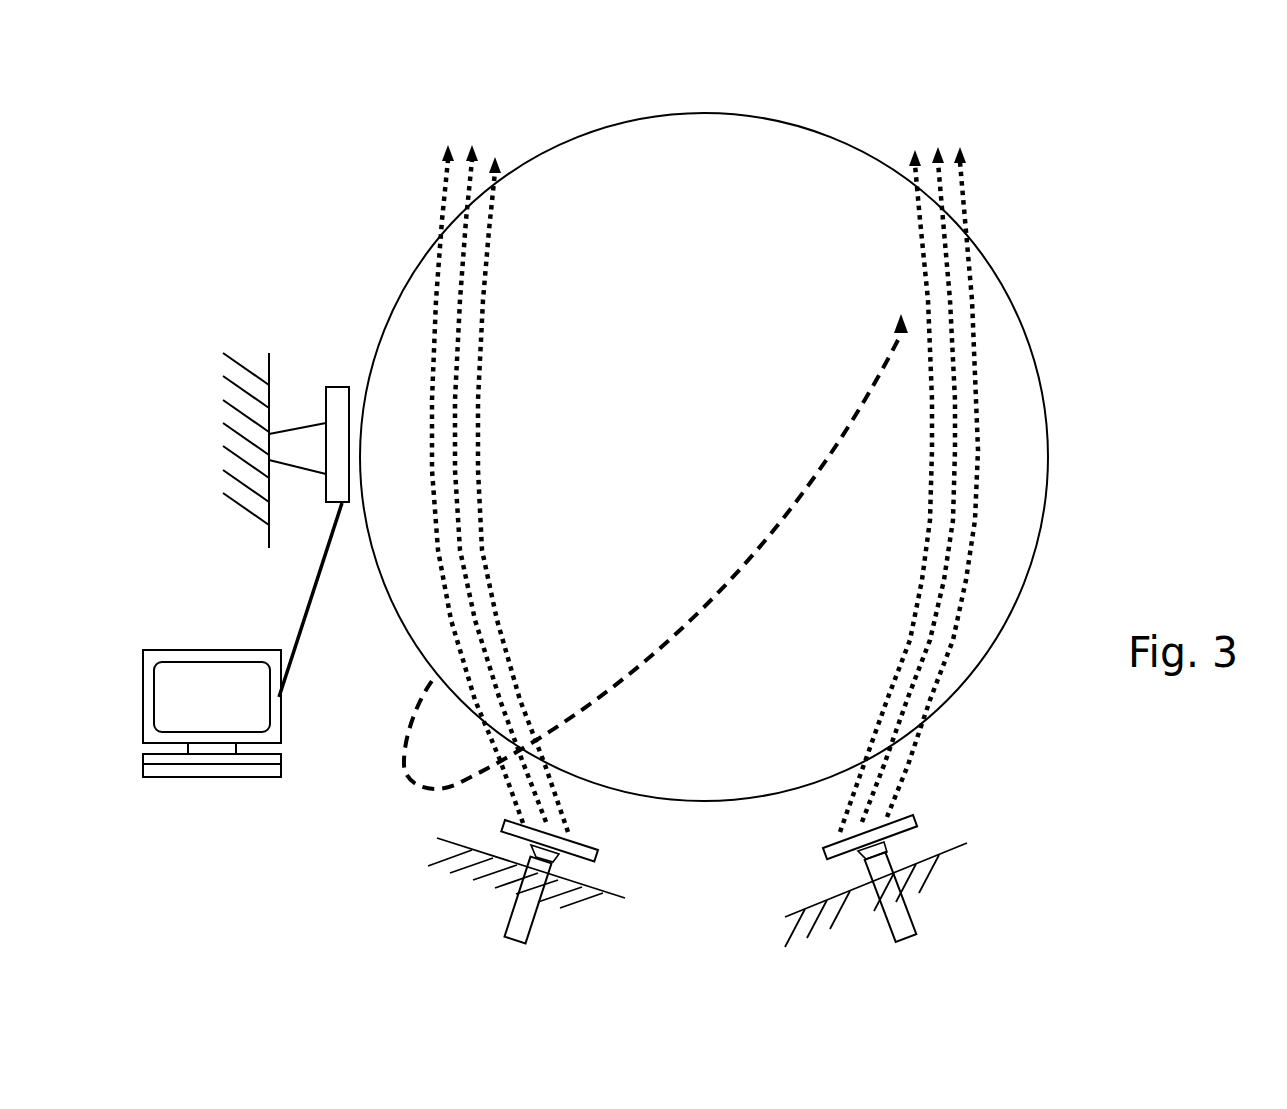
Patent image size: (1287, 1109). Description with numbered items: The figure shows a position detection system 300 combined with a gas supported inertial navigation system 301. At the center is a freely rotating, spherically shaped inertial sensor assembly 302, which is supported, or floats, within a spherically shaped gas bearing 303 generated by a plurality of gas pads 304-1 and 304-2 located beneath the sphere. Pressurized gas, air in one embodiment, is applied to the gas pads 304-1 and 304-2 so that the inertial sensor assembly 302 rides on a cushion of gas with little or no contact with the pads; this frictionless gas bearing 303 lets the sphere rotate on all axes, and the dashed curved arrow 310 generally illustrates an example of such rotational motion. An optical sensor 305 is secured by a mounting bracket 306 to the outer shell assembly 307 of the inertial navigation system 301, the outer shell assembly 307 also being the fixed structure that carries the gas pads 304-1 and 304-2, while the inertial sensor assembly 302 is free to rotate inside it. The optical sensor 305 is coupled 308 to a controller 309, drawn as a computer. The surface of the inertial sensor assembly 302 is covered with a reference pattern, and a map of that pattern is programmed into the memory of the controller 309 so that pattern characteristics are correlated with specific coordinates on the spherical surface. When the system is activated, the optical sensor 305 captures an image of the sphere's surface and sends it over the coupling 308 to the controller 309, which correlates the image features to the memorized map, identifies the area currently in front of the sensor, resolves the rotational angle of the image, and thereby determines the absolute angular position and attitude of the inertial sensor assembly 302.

The position detection system 300 is at (292, 262).
The gas supported inertial navigation system 301 is at (402, 163).
The inertial sensor assembly 302 is at (740, 228).
The gas bearing 303 is at (478, 550).
The gas pad 304-1 is at (503, 831).
The gas pad 304-2 is at (913, 815).
The optical sensor 305 is at (338, 387).
The mounting bracket 306 is at (298, 422).
The outer shell assembly 307 is at (245, 360).
The coupling 308 is at (303, 604).
The controller 309 is at (212, 777).
The rotational motion 310 is at (818, 442).